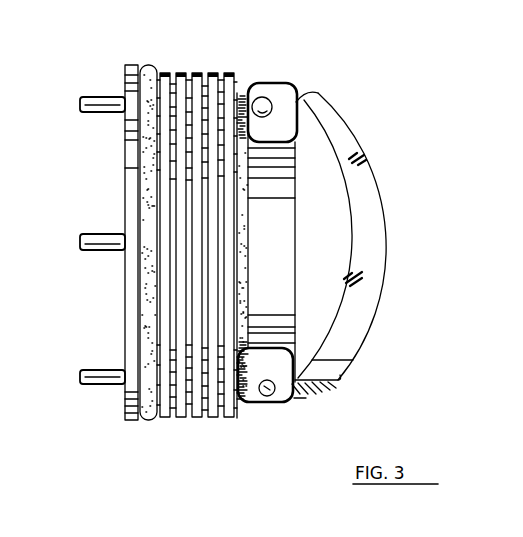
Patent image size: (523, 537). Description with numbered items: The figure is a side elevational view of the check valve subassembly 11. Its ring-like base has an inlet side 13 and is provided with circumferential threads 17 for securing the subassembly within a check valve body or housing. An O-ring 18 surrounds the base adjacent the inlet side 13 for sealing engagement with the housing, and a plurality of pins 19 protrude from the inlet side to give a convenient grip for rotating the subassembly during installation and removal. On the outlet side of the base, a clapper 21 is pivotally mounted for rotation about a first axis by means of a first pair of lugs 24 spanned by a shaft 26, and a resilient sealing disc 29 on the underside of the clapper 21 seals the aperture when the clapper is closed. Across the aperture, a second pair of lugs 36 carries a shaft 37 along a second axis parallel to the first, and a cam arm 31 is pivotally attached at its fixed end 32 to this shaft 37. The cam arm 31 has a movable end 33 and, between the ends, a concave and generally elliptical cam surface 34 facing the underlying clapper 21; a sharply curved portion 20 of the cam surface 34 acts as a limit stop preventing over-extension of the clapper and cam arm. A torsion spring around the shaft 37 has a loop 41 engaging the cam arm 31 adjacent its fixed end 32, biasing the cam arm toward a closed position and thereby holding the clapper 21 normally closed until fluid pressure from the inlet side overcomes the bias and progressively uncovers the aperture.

The check valve subassembly 11 is at (124, 56).
The inlet side 13 is at (125, 168).
The circumferential threads 17 is at (198, 71).
The O-ring 18 is at (149, 66).
The pins 19 is at (88, 97).
The sharply curved portion 20 is at (317, 95).
The clapper 21 is at (297, 288).
The first pair of lugs 24 is at (284, 100).
The shaft 26 is at (263, 96).
The resilient sealing disc 29 is at (250, 222).
The cam arm 31 is at (382, 190).
The fixed end 32 is at (308, 396).
The movable end 33 is at (327, 106).
The cam surface 34 is at (348, 245).
The second pair of lugs 36 is at (256, 403).
The shaft 37 is at (272, 391).
The loop 41 is at (342, 380).